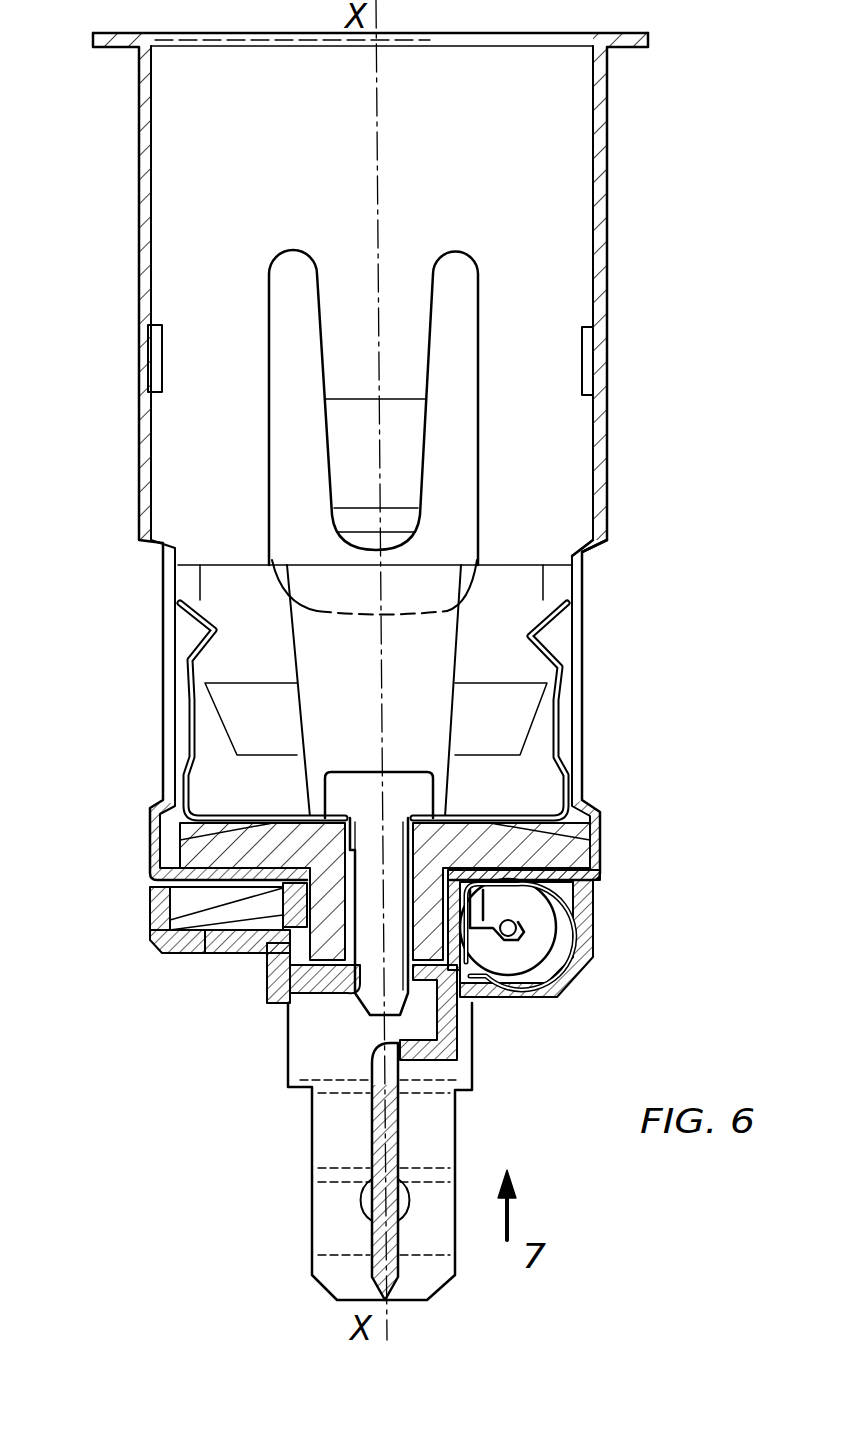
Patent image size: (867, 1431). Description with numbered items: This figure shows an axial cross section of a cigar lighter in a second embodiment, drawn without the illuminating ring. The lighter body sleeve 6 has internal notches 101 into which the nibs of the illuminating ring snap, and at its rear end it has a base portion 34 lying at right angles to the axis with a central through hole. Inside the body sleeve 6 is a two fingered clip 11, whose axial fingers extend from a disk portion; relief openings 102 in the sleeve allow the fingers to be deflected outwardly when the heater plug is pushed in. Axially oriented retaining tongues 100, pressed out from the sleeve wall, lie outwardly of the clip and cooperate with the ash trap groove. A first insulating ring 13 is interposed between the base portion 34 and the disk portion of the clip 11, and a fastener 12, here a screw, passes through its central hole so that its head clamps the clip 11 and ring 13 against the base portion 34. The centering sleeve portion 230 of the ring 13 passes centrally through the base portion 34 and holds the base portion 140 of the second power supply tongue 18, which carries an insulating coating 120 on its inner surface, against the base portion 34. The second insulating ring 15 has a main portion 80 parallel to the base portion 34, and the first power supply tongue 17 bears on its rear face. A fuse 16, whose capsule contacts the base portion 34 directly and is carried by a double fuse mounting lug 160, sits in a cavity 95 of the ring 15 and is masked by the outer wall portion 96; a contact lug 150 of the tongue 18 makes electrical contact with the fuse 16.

The lighter body sleeve 6 is at (607, 190).
The internal notches 101 is at (145, 330).
The retaining tongues 100 is at (345, 440).
The relief openings 102 is at (598, 552).
The two fingered clip 11 is at (562, 648).
The fastener 12 is at (355, 790).
The first insulating ring 13 is at (545, 855).
The second insulating ring 15 is at (157, 902).
The insulating means 120 is at (283, 893).
The base portion of the second power supply tongue 140 is at (200, 950).
The main portion 80 is at (246, 942).
The centering sleeve portion 230 is at (268, 985).
The base portion 34 is at (600, 884).
The fuse 16 is at (530, 916).
The double fuse mounting lug 160 is at (582, 974).
The cavity 95 is at (570, 973).
The contact lug 150 is at (502, 942).
The outer wall portion 96 is at (483, 1003).
The first electrical power supply tongue 17 is at (372, 1140).
The second power supply tongue 18 is at (428, 1147).